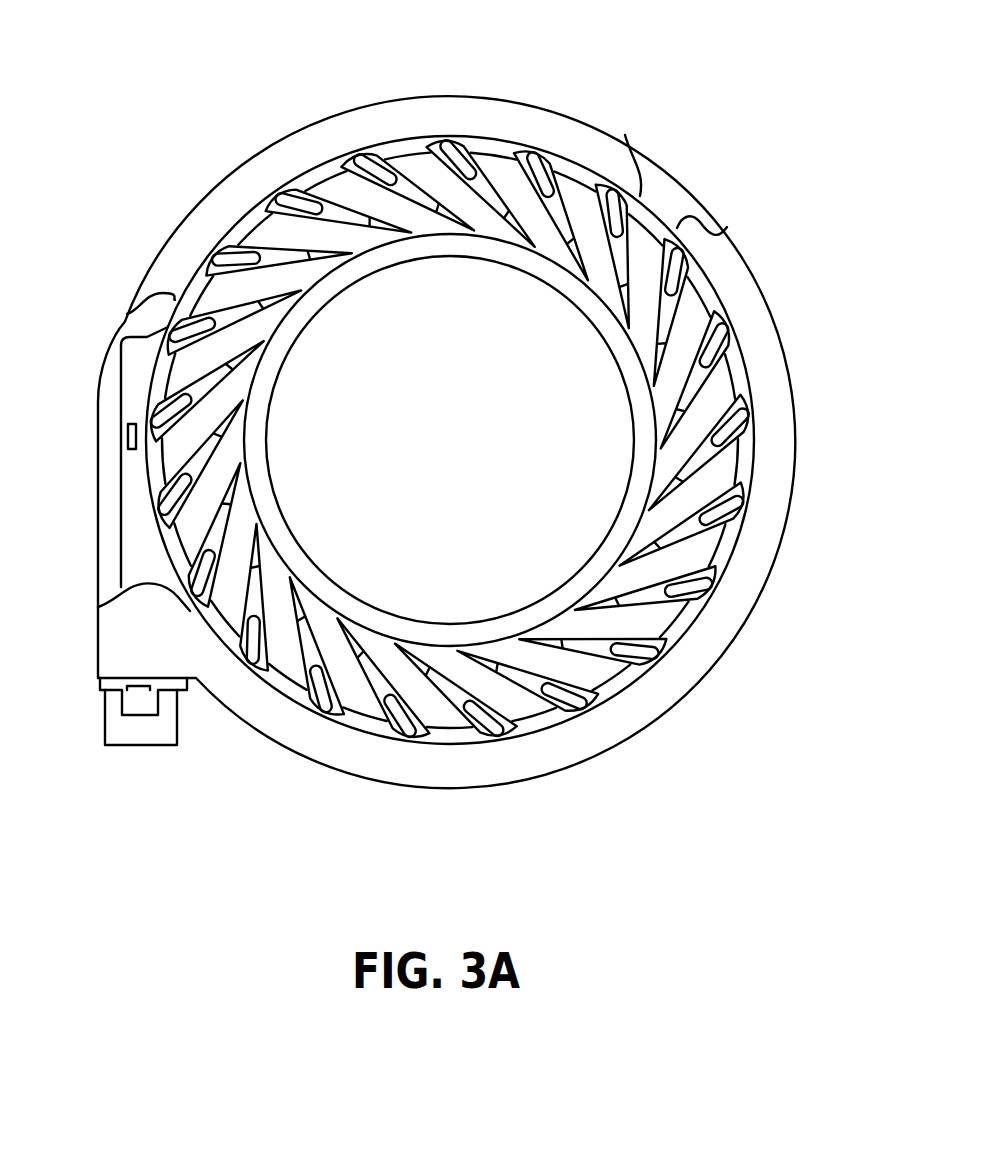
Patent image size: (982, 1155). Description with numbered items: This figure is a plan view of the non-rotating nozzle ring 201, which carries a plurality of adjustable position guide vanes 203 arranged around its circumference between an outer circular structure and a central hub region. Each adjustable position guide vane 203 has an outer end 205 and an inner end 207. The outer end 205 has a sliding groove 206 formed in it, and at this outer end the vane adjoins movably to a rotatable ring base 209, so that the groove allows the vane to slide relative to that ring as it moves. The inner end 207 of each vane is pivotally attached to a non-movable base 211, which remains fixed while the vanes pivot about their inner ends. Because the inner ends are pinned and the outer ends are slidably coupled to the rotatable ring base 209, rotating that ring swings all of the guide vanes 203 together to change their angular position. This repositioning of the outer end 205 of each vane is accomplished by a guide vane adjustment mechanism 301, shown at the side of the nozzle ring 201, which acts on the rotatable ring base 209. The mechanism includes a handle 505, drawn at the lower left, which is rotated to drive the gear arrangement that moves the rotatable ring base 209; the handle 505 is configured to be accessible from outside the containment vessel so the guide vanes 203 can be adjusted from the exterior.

The non-rotating nozzle ring 201 is at (352, 93).
The adjustable position guide vane 203 is at (560, 215).
The outer end 205 is at (727, 230).
The sliding groove 206 is at (625, 135).
The inner end 207 is at (677, 367).
The rotatable ring base 209 is at (655, 232).
The non-movable base 211 is at (712, 316).
The guide vane adjustment mechanism 301 is at (112, 552).
The handle 505 is at (147, 747).